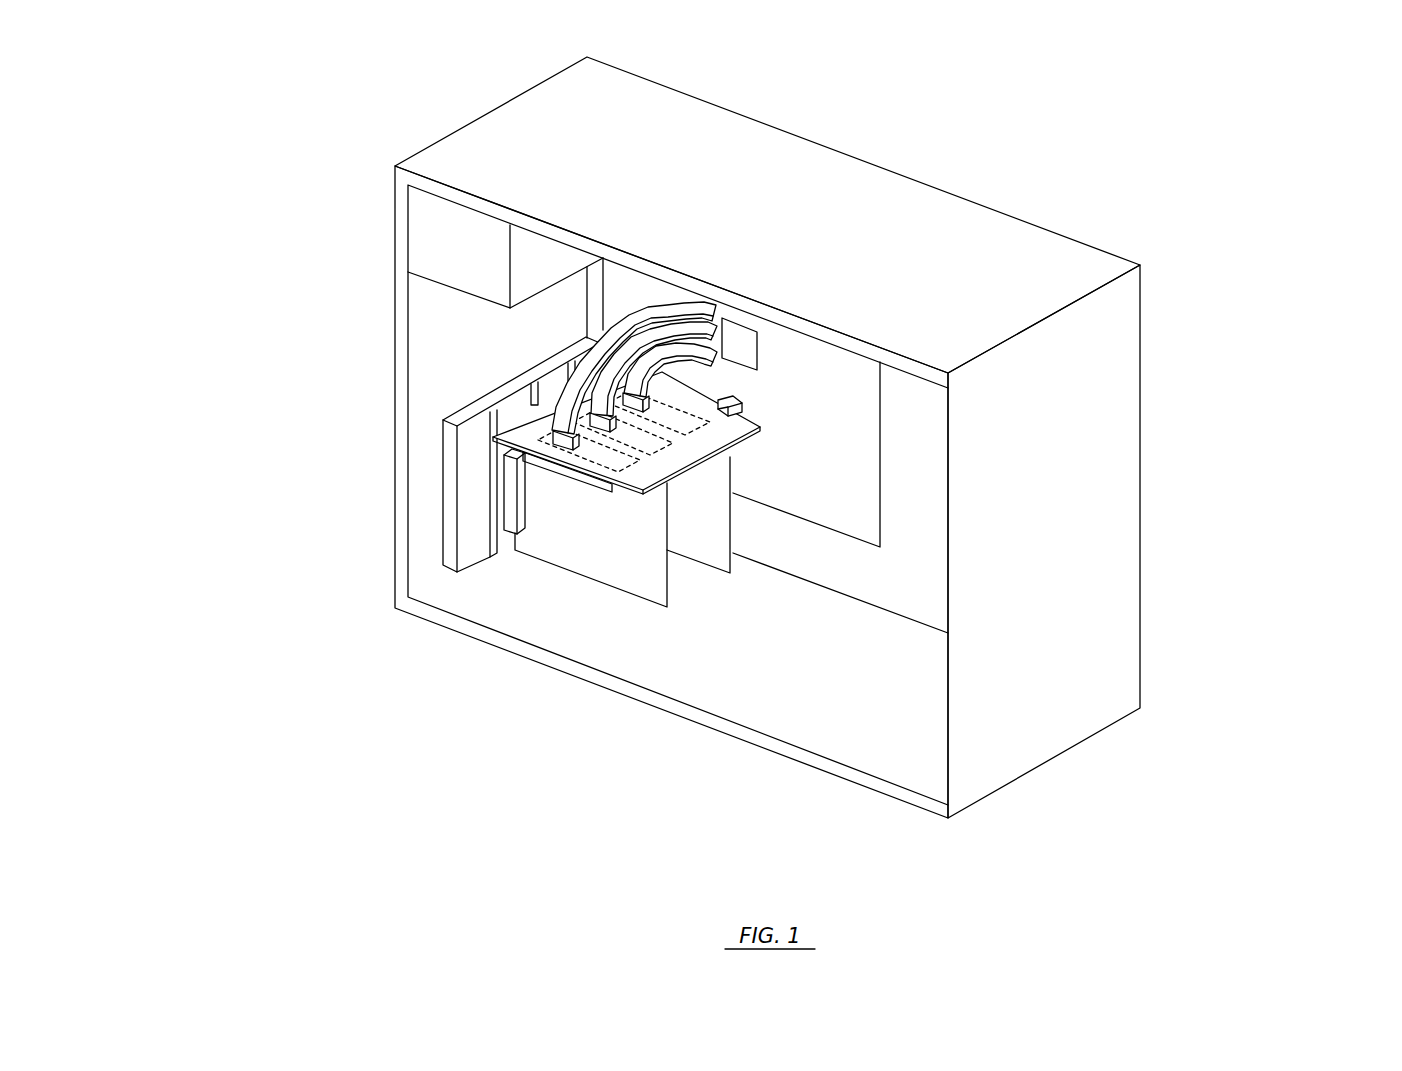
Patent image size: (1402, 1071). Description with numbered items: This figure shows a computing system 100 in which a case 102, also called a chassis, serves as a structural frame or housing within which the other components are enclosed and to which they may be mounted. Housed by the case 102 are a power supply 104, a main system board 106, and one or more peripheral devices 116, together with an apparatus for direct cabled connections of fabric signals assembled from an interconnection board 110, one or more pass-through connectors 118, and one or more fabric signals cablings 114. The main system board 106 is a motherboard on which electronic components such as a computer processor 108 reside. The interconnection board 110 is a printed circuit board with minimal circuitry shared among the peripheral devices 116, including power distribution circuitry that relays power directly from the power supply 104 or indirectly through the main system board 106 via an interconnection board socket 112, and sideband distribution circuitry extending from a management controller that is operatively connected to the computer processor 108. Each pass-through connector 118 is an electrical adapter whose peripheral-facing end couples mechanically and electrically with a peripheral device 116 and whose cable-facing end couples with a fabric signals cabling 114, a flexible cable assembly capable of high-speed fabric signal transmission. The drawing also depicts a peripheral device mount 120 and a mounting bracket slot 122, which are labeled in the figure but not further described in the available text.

The computing system 100 is at (1106, 106).
The case 102 is at (1062, 535).
The power supply 104 is at (455, 240).
The main system board 106 is at (833, 472).
The computer processor 108 is at (742, 342).
The interconnection board 110 is at (533, 425).
The interconnection board socket 112 is at (723, 405).
The fabric signals cabling 114 is at (620, 330).
The peripheral device 116 is at (713, 527).
The pass-through connector 118 is at (580, 470).
The peripheral device mount 120 is at (510, 490).
The mounting bracket slot 122 is at (470, 462).